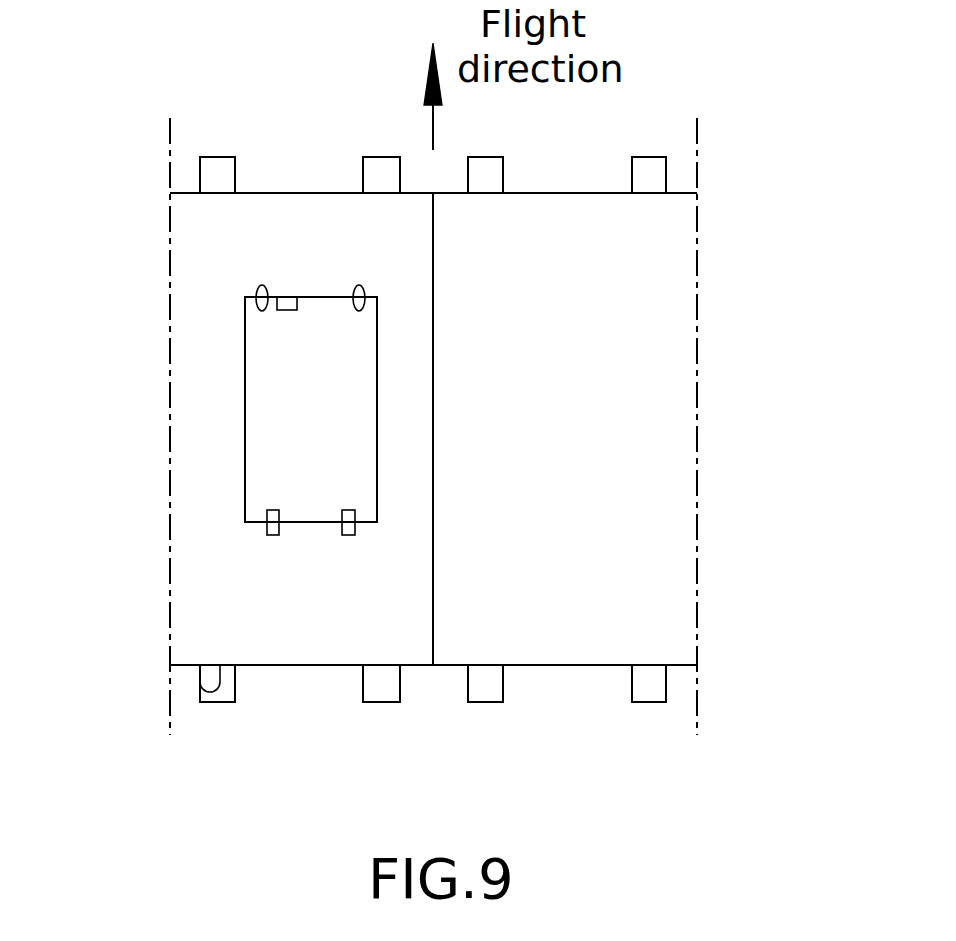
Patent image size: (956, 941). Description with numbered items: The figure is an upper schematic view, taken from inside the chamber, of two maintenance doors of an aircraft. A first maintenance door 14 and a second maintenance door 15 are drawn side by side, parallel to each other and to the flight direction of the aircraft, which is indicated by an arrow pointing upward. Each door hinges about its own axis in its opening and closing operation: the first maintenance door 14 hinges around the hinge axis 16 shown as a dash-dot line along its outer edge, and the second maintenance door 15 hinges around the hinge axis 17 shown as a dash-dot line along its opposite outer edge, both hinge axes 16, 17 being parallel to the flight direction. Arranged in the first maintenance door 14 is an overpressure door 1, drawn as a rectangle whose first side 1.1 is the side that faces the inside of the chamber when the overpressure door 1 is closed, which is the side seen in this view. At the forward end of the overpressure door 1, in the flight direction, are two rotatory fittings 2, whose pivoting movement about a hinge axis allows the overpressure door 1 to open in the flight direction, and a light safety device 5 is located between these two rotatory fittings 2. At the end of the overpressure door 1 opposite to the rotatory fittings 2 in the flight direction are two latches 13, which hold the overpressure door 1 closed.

The overpressure door 1 is at (260, 414).
The first side 1.1 is at (262, 444).
The rotatory fittings 2 is at (259, 285).
The light safety device 5 is at (285, 295).
The latches 13 is at (265, 530).
The first maintenance door 14 is at (372, 643).
The second maintenance door 15 is at (675, 340).
The hinge axis 16 is at (168, 720).
The hinge axis 17 is at (697, 688).